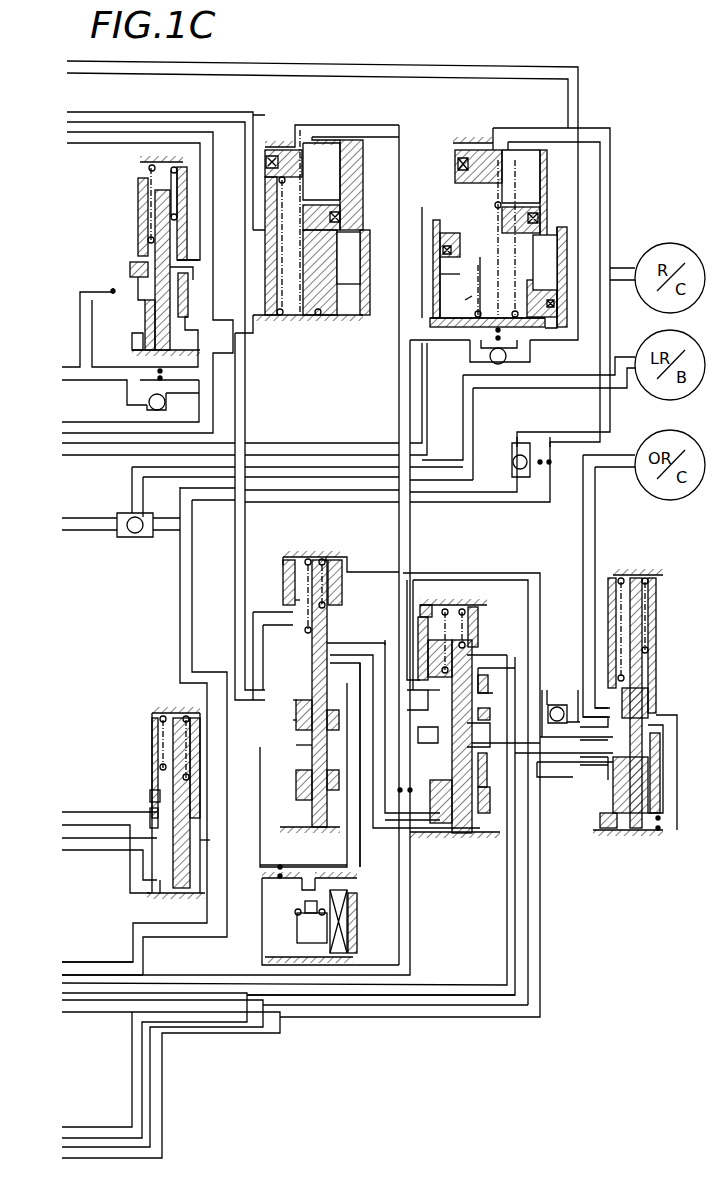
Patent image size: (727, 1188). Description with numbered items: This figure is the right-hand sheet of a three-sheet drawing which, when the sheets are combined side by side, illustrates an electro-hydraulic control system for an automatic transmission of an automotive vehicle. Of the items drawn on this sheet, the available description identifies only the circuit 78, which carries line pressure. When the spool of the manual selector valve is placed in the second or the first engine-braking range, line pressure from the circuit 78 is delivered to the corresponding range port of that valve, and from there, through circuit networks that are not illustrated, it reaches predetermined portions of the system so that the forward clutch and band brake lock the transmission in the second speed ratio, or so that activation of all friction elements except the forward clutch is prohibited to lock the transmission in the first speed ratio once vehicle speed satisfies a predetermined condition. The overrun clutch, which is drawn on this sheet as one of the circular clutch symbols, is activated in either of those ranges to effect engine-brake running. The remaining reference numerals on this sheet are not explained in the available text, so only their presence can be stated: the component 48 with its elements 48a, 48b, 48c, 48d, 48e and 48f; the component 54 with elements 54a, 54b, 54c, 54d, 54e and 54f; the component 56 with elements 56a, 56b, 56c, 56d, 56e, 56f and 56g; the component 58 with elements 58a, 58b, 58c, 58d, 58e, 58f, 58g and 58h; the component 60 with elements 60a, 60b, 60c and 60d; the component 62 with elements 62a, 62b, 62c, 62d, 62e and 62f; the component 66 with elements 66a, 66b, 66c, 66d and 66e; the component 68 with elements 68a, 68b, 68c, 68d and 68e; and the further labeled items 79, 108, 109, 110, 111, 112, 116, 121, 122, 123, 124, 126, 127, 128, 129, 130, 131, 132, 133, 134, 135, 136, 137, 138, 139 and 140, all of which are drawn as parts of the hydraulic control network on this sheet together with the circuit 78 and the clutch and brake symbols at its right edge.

The pressure regulator valve 48 is at (124, 214).
The spring 48a is at (147, 168).
The spool 48b is at (150, 240).
The land 48c is at (135, 263).
The land 48d is at (140, 292).
The chamber 48e is at (135, 340).
The port 48f is at (110, 290).
The shift valve 54 is at (160, 706).
The spring 54a is at (200, 732).
The spool 54b is at (166, 767).
The land 54c is at (158, 812).
The port 54d is at (240, 843).
The land 54e is at (154, 793).
The chamber 54f is at (164, 897).
The shift valve 56 is at (298, 552).
The spring 56a is at (328, 560).
The land 56b is at (300, 600).
The land 56c is at (292, 746).
The port 56d is at (335, 645).
The port 56e is at (295, 698).
The port 56f is at (292, 720).
The chamber 56g is at (290, 566).
The shift valve 58 is at (443, 598).
The spring 58a is at (470, 608).
The spool 58b is at (480, 638).
The land 58c is at (472, 822).
The port 58d is at (430, 694).
The port 58e is at (472, 706).
The port 58f is at (486, 750).
The port 58g is at (433, 750).
The chamber 58h is at (487, 662).
The solenoid valve 60 is at (374, 886).
The coil 60a is at (348, 950).
The plunger 60b is at (328, 930).
The housing 60c is at (357, 906).
The port 60d is at (330, 884).
The shift valve 62 is at (600, 837).
The spring 62a is at (648, 606).
The spool 62b is at (652, 673).
The land 62c is at (613, 773).
The port 62d is at (655, 752).
The port 62e is at (606, 716).
The chamber 62f is at (642, 828).
The accumulator 66 is at (282, 125).
The piston 66a is at (338, 208).
The port 66b is at (302, 322).
The spring 66c is at (345, 262).
The chamber 66d is at (330, 170).
The port 66e is at (268, 322).
The accumulator 68 is at (460, 128).
The piston 68a is at (540, 212).
The port 68b is at (476, 296).
The spring 68c is at (545, 256).
The chamber 68d is at (520, 174).
The port 68e is at (470, 290).
The circuit 78 is at (198, 112).
The line 79 is at (236, 1023).
The line 108 is at (148, 888).
The line 109 is at (361, 841).
The line 110 is at (282, 866).
The line 111 is at (92, 458).
The line 112 is at (197, 963).
The line 116 is at (428, 997).
The line 121 is at (213, 172).
The check valve 122 is at (140, 405).
The line 123 is at (80, 329).
The line 124 is at (73, 422).
The line 126 is at (90, 531).
The check valve 127 is at (136, 533).
The line 128 is at (612, 150).
The check valve 129 is at (556, 475).
The line 130 is at (467, 407).
The line 131 is at (73, 810).
The line 132 is at (70, 852).
The line 133 is at (235, 593).
The line 134 is at (385, 634).
The line 135 is at (420, 63).
The check valve 136 is at (536, 350).
The line 137 is at (561, 750).
The line 138 is at (583, 576).
The check valve 139 is at (560, 668).
The line 140 is at (543, 572).